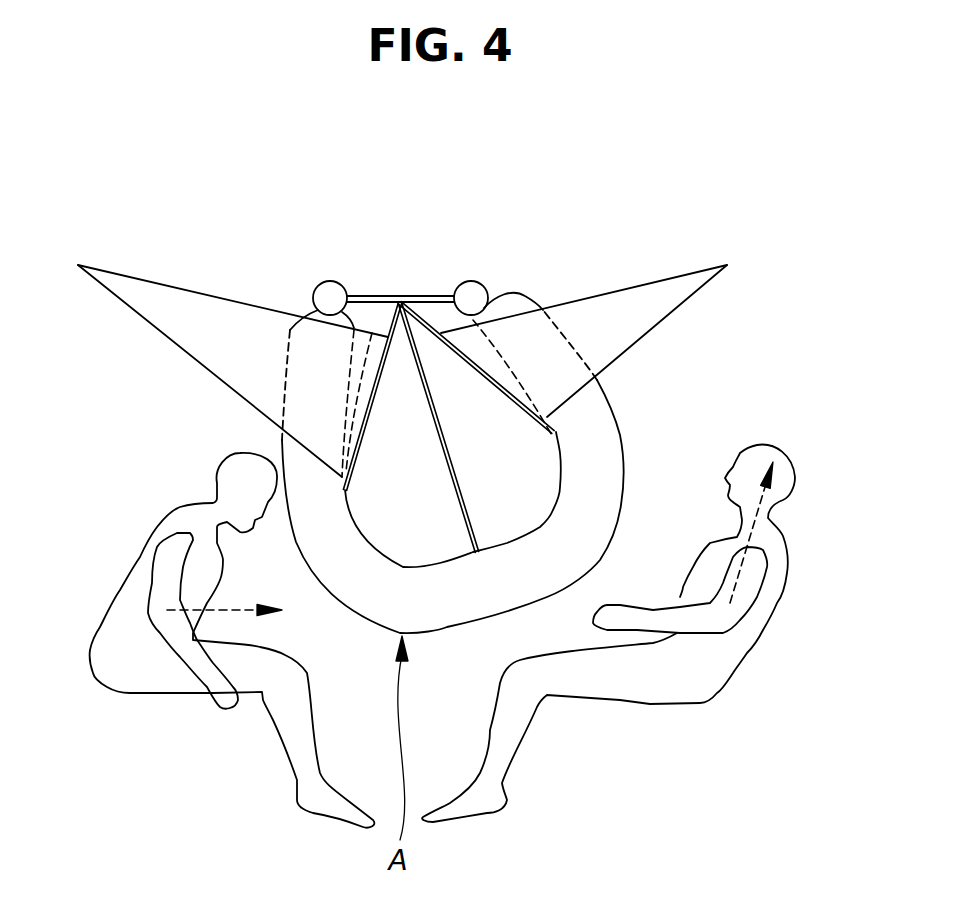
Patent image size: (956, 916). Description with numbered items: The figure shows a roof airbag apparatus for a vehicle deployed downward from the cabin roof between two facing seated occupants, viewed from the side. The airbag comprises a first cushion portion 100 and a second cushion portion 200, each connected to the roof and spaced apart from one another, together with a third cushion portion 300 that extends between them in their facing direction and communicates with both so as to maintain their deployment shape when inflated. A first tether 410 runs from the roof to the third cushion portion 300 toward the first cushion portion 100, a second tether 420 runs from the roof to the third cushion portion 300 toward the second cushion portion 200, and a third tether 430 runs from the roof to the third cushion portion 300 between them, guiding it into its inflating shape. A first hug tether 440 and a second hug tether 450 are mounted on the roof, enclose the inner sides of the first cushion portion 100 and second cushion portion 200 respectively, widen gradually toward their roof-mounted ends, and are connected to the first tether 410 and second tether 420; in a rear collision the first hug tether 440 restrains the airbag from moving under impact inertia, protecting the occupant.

The first cushion portion 100 is at (297, 483).
The second cushion portion 200 is at (603, 427).
The third cushion portion 300 is at (535, 580).
The first tether 410 is at (360, 385).
The second tether 420 is at (497, 375).
The third tether 430 is at (457, 490).
The first hug tether 440 is at (196, 308).
The second hug tether 450 is at (643, 297).